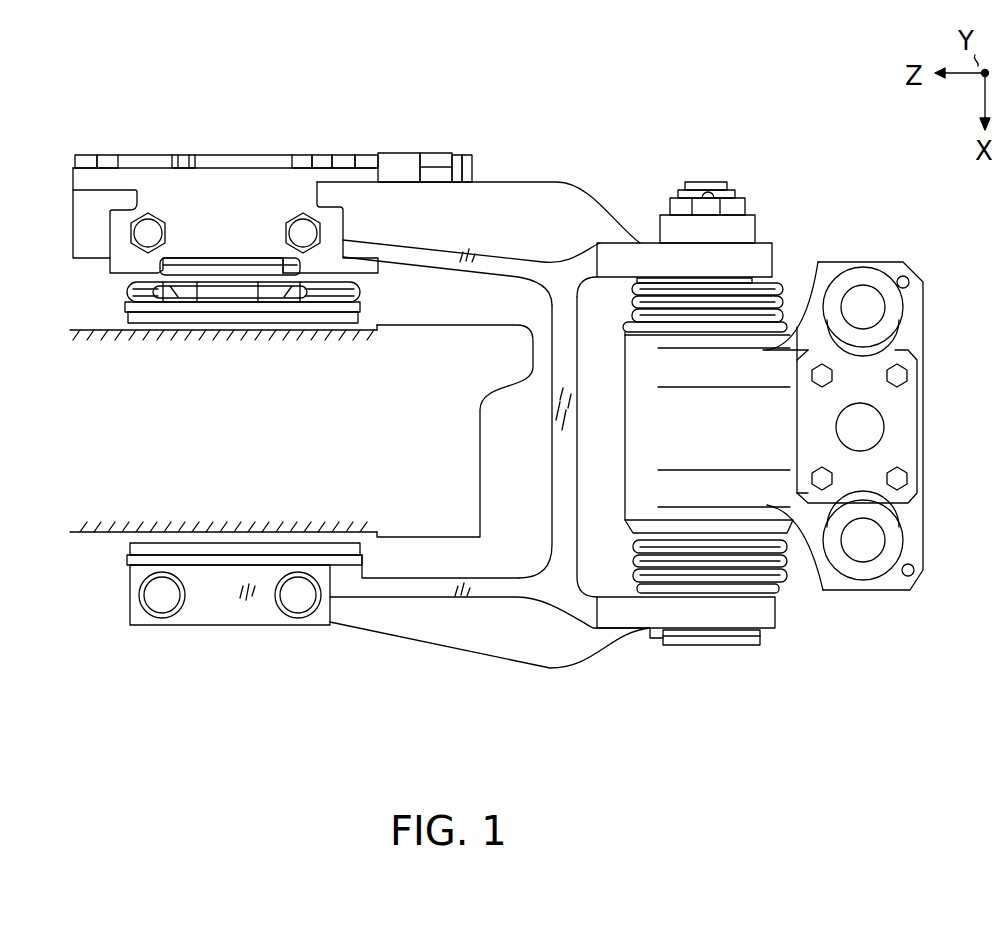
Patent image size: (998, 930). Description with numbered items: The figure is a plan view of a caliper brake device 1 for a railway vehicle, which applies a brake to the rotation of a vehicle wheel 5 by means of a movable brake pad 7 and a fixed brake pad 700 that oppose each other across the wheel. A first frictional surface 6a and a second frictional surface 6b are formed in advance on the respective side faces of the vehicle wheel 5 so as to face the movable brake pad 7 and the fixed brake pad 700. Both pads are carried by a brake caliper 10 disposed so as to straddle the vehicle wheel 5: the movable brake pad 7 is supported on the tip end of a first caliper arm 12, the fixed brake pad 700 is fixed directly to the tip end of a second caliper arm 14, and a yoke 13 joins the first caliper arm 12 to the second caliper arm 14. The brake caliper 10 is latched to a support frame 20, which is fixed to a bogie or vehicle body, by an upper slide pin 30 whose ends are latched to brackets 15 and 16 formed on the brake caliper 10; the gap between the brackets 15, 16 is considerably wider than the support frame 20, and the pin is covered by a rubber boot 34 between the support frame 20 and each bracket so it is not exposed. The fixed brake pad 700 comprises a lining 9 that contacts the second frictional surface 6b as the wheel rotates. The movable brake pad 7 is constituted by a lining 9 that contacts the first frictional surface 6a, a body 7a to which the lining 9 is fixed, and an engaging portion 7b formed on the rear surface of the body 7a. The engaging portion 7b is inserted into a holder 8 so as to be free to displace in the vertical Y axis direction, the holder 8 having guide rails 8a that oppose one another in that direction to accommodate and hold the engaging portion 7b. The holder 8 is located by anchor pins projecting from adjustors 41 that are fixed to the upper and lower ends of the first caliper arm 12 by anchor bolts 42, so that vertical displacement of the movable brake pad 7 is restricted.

The caliper brake device 1 is at (142, 102).
The adjustors 41 is at (246, 167).
The guide rails 8a is at (177, 292).
The engaging portion 7b is at (222, 288).
The anchor bolts 42 is at (115, 233).
The movable brake pad 7 is at (108, 299).
The first frictional surface 6a is at (96, 330).
The holder 8 is at (363, 290).
The lining 9 is at (362, 314).
The body 7a is at (409, 308).
The vehicle wheel 5 is at (438, 330).
The second frictional surface 6b is at (88, 536).
The fixed brake pad 700 is at (118, 572).
The brake caliper 10 is at (570, 178).
The first caliper arm 12 is at (486, 252).
The yoke 13 is at (550, 447).
The second caliper arm 14 is at (432, 598).
The bracket 15 is at (763, 243).
The upper slide pin 30 is at (705, 183).
The rubber boot 34 is at (778, 280).
The bracket 16 is at (767, 632).
The support frame 20 is at (912, 264).